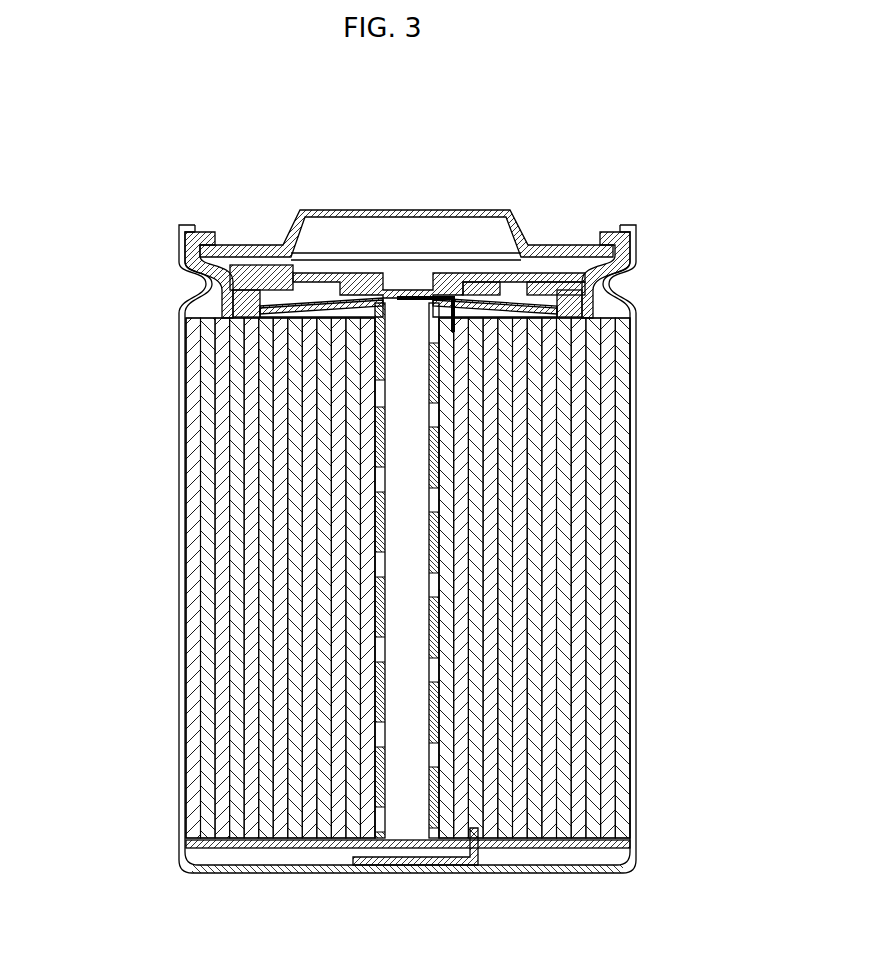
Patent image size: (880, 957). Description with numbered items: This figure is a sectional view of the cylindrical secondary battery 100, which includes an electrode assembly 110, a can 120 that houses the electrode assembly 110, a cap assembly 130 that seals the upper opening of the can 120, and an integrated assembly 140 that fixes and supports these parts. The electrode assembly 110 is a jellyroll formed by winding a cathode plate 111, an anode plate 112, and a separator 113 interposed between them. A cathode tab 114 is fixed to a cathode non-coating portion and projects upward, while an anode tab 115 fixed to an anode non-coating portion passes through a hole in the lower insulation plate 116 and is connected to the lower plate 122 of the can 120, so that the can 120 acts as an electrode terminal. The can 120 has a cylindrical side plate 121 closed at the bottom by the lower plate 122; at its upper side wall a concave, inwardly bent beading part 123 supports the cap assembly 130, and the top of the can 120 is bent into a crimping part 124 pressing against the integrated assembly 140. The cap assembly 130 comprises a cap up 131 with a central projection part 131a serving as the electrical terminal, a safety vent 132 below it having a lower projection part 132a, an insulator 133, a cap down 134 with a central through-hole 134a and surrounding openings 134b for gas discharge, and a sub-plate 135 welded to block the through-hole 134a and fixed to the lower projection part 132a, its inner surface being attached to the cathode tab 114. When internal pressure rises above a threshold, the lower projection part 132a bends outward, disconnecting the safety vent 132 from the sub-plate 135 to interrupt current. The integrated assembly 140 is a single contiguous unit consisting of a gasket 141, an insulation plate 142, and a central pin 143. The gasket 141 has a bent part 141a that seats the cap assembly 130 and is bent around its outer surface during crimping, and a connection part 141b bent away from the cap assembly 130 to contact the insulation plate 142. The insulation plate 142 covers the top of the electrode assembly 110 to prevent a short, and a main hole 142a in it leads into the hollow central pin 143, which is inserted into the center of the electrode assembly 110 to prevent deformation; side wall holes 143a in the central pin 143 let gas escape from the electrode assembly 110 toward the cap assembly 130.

The cylindrical secondary battery 100 is at (152, 84).
The electrode assembly 110 is at (710, 365).
The cathode plate 111 is at (623, 410).
The anode plate 112 is at (604, 478).
The separator 113 is at (612, 445).
The cathode tab 114 is at (405, 322).
The anode tab 115 is at (458, 866).
The lower insulation plate 116 is at (262, 848).
The can 120 is at (176, 514).
The side plate 121 is at (180, 545).
The lower plate 122 is at (337, 873).
The beading part 123 is at (608, 289).
The crimping part 124 is at (620, 232).
The cap assembly 130 is at (290, 138).
The cap up 131 is at (388, 205).
The projection part 131a is at (350, 272).
The safety vent 132 is at (510, 273).
The lower projection part 132a is at (323, 287).
The insulator 133 is at (547, 246).
The cap down 134 is at (580, 268).
The through-hole 134a is at (387, 290).
The openings 134b is at (283, 242).
The sub-plate 135 is at (299, 262).
The integrated assembly 140 is at (50, 270).
The gasket 141 is at (102, 248).
The bent part 141a is at (190, 250).
The connection part 141b is at (206, 283).
The insulation plate 142 is at (385, 350).
The main hole 142a is at (370, 420).
The central pin 143 is at (380, 480).
The side wall holes 143a is at (355, 490).